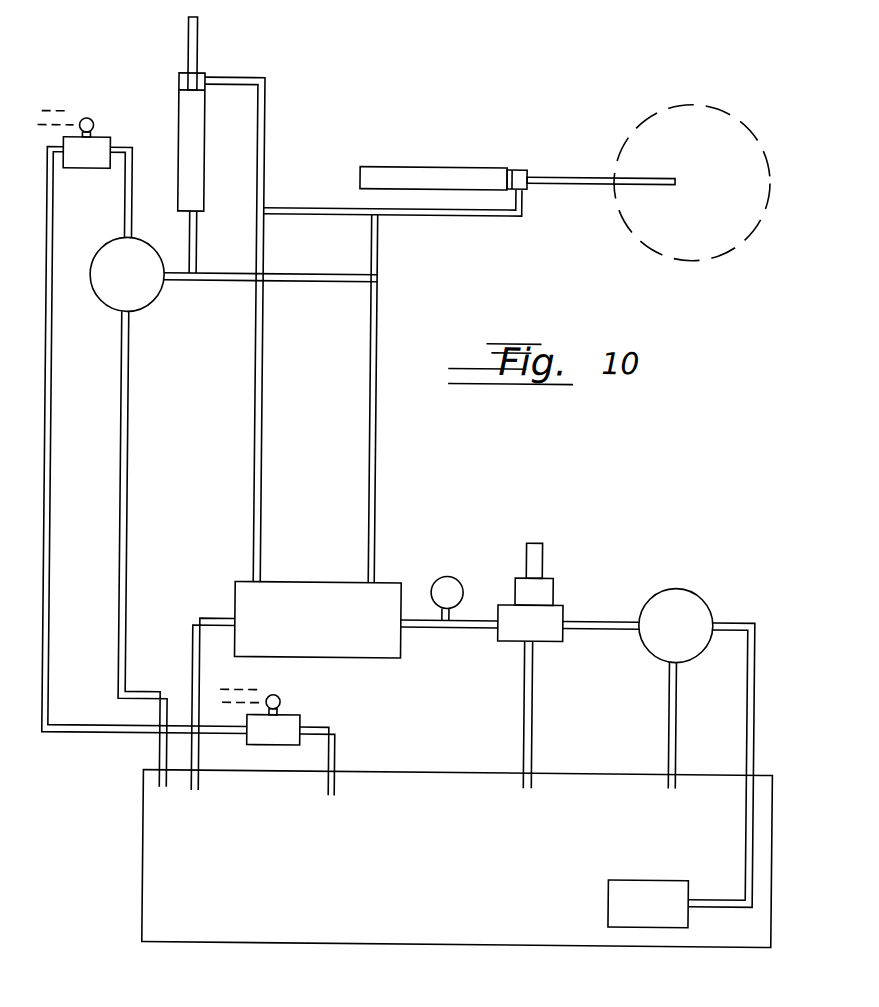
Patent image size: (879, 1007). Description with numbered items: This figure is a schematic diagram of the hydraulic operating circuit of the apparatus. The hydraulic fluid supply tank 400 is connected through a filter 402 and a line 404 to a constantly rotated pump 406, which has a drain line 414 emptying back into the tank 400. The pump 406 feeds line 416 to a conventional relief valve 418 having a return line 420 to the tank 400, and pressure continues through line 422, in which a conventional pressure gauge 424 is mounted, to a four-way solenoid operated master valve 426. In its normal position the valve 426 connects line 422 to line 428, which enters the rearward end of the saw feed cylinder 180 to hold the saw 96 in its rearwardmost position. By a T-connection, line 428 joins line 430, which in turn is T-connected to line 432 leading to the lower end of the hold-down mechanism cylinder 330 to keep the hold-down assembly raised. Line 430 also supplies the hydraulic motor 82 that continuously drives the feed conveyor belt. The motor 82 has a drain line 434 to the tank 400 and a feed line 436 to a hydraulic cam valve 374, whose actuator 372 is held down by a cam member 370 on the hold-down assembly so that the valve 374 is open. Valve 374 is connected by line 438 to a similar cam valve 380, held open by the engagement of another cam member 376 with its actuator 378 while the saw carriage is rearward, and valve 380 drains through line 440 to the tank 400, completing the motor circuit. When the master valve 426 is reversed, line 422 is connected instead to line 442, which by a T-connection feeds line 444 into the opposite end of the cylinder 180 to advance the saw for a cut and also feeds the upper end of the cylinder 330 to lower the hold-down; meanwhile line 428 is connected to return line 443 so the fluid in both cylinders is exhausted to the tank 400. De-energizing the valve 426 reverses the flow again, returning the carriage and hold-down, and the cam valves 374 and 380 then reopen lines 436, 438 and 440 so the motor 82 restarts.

The hydraulic motor 82 is at (127, 274).
The saw 96 is at (699, 122).
The saw feed cylinder 180 is at (434, 178).
The hold-down mechanism cylinder 330 is at (201, 167).
The cam member 370 is at (60, 114).
The actuator 372 is at (90, 128).
The hydraulic cam valve 374 is at (86, 152).
The cam member 376 is at (268, 692).
The actuator 378 is at (284, 707).
The cam valve 380 is at (273, 730).
The hydraulic fluid supply tank 400 is at (382, 946).
The filter 402 is at (648, 904).
The line 404 is at (757, 737).
The pump 406 is at (699, 604).
The drain line 414 is at (681, 748).
The line 416 is at (602, 619).
The relief valve 418 is at (554, 609).
The return line 420 is at (535, 733).
The line 422 is at (481, 627).
The pressure gauge 424 is at (458, 579).
The 4-way solenoid operated master valve 426 is at (318, 619).
The line 428 is at (376, 476).
The line 430 is at (310, 283).
The line 432 is at (194, 259).
The drain line 434 is at (127, 400).
The feed line 436 is at (129, 204).
The line 438 is at (50, 487).
The line 440 is at (338, 754).
The line 442 is at (261, 117).
The return line 443 is at (206, 608).
The line 444 is at (299, 209).